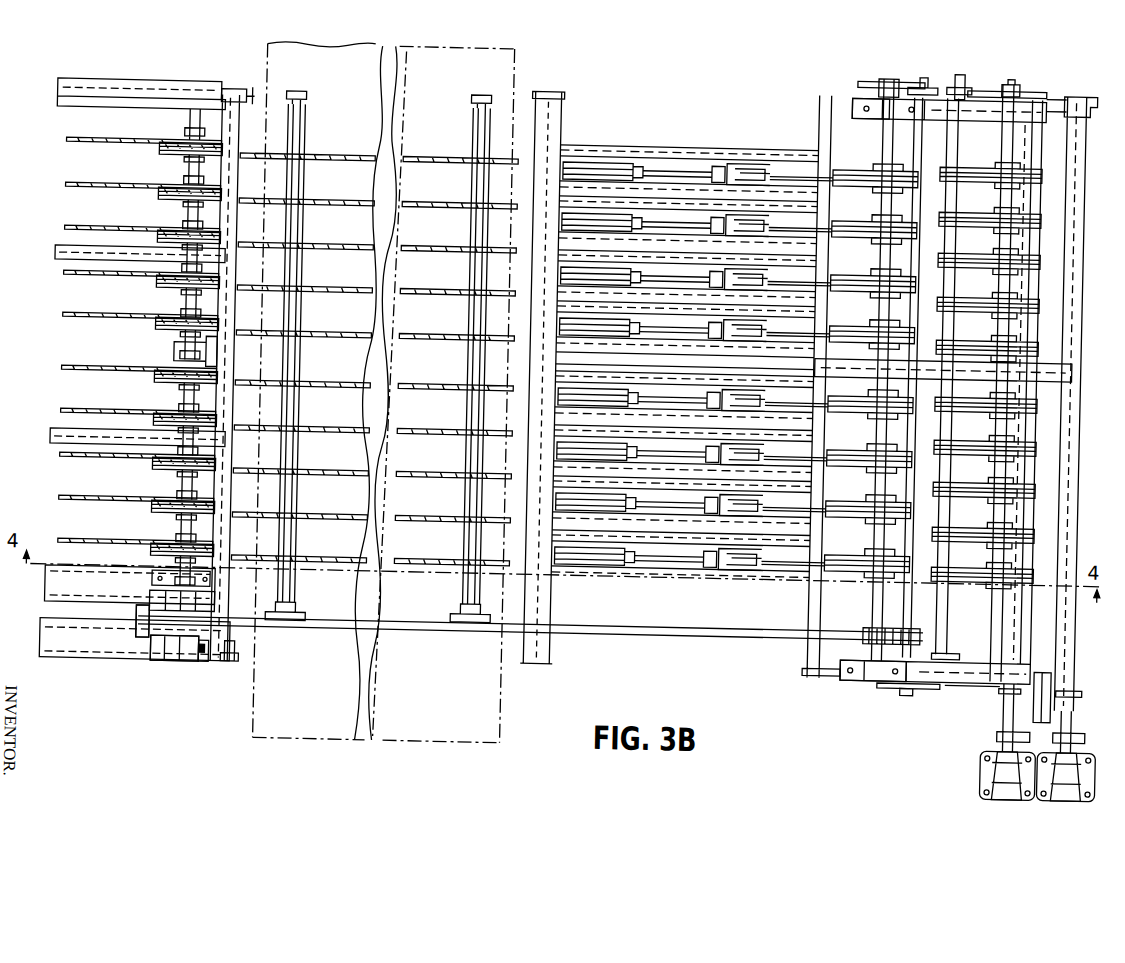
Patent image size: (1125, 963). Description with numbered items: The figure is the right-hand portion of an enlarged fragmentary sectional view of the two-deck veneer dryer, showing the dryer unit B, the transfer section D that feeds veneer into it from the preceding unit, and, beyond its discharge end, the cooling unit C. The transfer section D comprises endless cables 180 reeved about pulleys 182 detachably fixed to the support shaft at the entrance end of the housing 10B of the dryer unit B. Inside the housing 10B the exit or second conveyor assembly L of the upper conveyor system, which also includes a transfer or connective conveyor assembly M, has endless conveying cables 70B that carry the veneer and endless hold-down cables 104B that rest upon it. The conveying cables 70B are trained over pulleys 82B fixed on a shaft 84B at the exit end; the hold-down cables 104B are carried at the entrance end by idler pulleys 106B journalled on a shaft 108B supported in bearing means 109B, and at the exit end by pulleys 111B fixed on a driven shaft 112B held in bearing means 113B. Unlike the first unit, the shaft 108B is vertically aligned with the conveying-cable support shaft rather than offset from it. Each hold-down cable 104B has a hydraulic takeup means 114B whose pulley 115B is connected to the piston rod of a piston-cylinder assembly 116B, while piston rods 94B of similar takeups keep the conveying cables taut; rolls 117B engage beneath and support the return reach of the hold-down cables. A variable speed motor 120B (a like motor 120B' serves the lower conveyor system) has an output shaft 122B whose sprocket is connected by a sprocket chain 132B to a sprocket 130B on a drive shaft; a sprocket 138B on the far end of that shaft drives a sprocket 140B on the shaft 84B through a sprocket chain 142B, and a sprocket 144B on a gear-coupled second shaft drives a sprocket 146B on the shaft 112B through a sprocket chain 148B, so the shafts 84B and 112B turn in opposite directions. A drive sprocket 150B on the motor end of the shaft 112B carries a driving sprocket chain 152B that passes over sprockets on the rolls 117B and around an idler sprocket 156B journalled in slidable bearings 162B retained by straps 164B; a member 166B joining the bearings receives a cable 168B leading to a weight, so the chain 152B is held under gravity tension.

The housing 10B is at (430, 750).
The endless conveying members 70B is at (981, 162).
The pulleys 82B is at (975, 208).
The shaft 84B is at (1003, 616).
The piston rods 94B is at (688, 169).
The endless hold-down members 104B is at (347, 216).
The idler pulleys 106B is at (303, 501).
The rotatable support shaft 108B is at (178, 492).
The bearing means 109B is at (170, 584).
The pulleys 111B is at (857, 212).
The driven shaft 112B is at (878, 138).
The bearing means 113B is at (860, 670).
The takeup means 114B is at (584, 149).
The takeup pulleys 115B is at (775, 160).
The piston-cylinder assemblies 116B is at (622, 162).
The rolls 117B is at (296, 131).
The variable speed motor 120B is at (1068, 792).
The variable speed motor 120B' is at (976, 775).
The output shaft 122B is at (1080, 706).
The sprocket 130B is at (898, 682).
The sprocket chain 132B is at (972, 680).
The sprocket 138B is at (910, 75).
The sprocket 140B is at (1046, 90).
The sprocket chain 142B is at (980, 82).
The sprocket 144B is at (962, 72).
The sprocket 146B is at (852, 88).
The sprocket chain 148B is at (935, 78).
The drive sprocket 150B is at (868, 624).
The driving sprocket chain 152B is at (700, 634).
The idler sprocket 156B is at (165, 620).
The bearings 162B is at (182, 668).
The straps 164B is at (209, 670).
The interconnecting member 166B is at (147, 640).
The cable 168B is at (47, 635).
The transfer cables 180 is at (135, 192).
The pulleys 182 is at (169, 146).
The dryer unit B is at (318, 58).
The cooling unit C is at (423, 60).
The transfer section D is at (166, 80).
The exit conveyor assembly L is at (440, 640).
The transfer conveyor assembly M is at (92, 309).